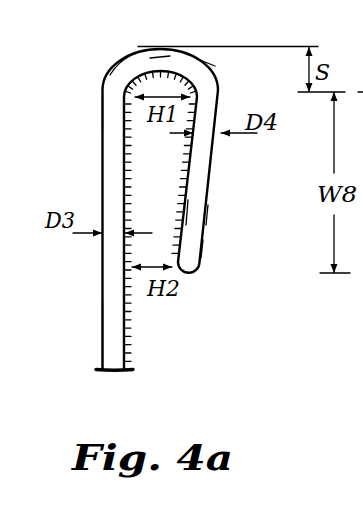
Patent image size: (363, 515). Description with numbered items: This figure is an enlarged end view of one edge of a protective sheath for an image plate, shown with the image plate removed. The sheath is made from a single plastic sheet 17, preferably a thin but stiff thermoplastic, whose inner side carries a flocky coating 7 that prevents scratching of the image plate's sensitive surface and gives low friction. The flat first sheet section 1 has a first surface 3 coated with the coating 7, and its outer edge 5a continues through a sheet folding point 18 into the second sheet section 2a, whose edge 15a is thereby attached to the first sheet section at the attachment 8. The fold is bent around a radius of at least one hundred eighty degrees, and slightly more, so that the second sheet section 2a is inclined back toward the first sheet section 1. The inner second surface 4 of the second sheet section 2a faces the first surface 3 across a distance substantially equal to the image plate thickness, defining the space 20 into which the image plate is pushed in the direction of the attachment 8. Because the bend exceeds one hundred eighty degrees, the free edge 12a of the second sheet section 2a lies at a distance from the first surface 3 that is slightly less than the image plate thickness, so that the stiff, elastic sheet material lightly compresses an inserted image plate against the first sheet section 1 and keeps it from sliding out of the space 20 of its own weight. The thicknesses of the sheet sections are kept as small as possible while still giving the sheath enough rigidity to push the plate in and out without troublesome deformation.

The first sheet section 1 is at (110, 342).
The second sheet section 2a is at (200, 220).
The first surface 3 is at (128, 317).
The second surface 4 is at (176, 210).
The outer edge of the first sheet section 5a is at (110, 88).
The coating 7 is at (176, 168).
The attachment 8 is at (117, 58).
The edge of the second sheet section 12a is at (205, 260).
The edge of the second sheet section 15a is at (204, 72).
The plastic sheet 17 is at (112, 312).
The sheet folding point 18 is at (163, 62).
The space 20 is at (152, 209).